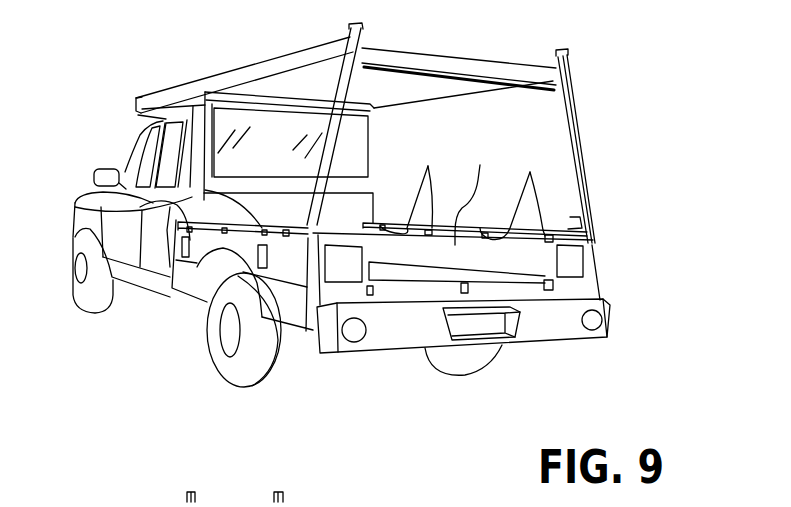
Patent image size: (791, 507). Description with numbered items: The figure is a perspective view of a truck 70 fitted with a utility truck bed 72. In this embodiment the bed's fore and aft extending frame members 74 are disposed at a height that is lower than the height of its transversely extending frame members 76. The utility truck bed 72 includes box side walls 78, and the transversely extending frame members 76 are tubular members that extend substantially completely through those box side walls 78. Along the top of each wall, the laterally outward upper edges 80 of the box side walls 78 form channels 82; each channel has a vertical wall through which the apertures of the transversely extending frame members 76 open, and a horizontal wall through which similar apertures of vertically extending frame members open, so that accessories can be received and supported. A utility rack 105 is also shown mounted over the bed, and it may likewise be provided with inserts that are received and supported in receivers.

The truck 70 is at (640, 200).
The utility truck bed 72 is at (617, 288).
The fore and aft extending frame members 74 is at (548, 287).
The transversely extending frame members 76 is at (76, 204).
The box side walls 78 is at (330, 440).
The laterally outward upper edges 80 is at (199, 241).
The channels 82 is at (268, 232).
The utility rack 105 is at (368, 50).